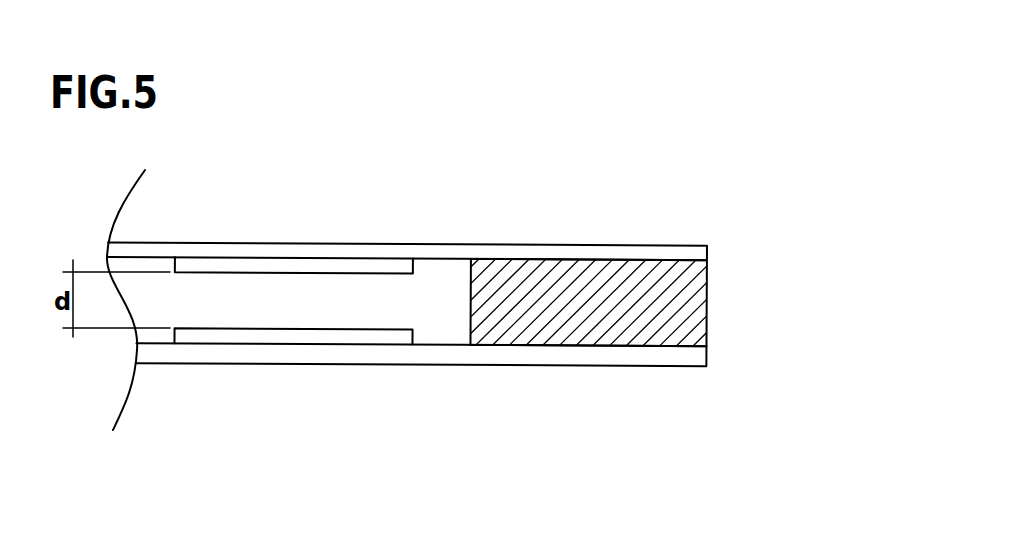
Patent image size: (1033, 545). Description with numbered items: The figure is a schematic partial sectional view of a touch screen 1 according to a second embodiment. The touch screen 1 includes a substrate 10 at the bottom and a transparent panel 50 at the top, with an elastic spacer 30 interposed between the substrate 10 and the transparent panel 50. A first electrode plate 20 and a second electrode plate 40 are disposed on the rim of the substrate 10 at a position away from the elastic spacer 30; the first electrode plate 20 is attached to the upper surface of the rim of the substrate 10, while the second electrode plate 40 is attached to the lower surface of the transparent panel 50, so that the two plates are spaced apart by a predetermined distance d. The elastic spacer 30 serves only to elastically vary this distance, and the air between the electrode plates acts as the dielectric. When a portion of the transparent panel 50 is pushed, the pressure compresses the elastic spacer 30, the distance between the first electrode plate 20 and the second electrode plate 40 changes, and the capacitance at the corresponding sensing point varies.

The touch screen 1 is at (635, 177).
The substrate 10 is at (420, 359).
The first electrode plate 20 is at (265, 335).
The elastic spacer 30 is at (695, 301).
The second electrode plate 40 is at (245, 265).
The transparent panel 50 is at (442, 248).